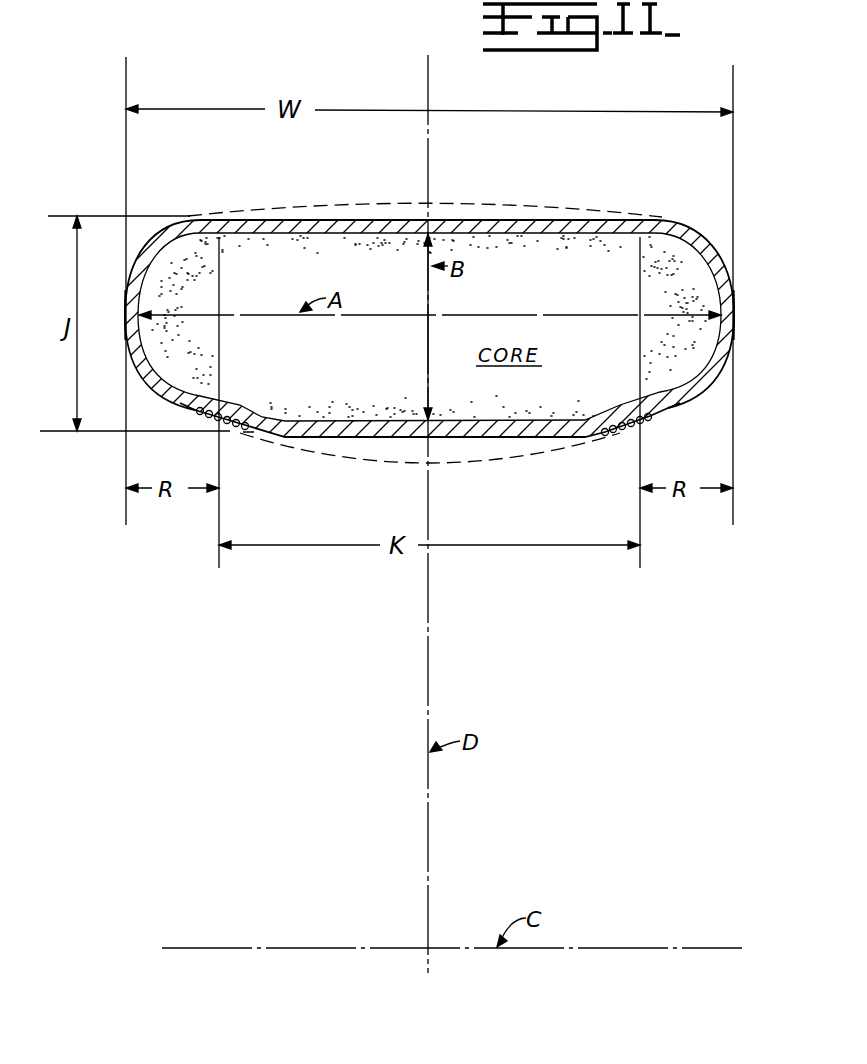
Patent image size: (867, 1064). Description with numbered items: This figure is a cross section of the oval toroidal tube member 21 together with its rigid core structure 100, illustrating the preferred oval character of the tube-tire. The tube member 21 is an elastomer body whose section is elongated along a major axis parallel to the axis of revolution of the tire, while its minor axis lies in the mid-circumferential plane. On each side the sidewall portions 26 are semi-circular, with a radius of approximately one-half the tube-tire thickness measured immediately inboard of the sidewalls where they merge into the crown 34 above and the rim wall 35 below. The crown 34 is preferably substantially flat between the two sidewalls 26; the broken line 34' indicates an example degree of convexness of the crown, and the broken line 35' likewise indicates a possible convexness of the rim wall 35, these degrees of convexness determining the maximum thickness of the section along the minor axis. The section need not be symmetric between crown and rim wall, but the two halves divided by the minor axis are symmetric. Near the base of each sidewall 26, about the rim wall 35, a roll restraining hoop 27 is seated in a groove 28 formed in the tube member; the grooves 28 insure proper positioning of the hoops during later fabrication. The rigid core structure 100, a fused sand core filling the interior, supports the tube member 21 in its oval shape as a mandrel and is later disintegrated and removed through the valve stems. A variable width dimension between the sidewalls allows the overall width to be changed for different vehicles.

The toroidal tube member 21 is at (690, 222).
The sidewall portion 26 is at (128, 300).
The roll restraining hoop 27 is at (195, 409).
The groove 28 is at (233, 428).
The crown 34 is at (350, 200).
The broken line representing convex crown 34' is at (425, 194).
The rim wall 35 is at (360, 461).
The broken line representing convex rim wall 35' is at (430, 470).
The rigid core structure 100 is at (549, 301).